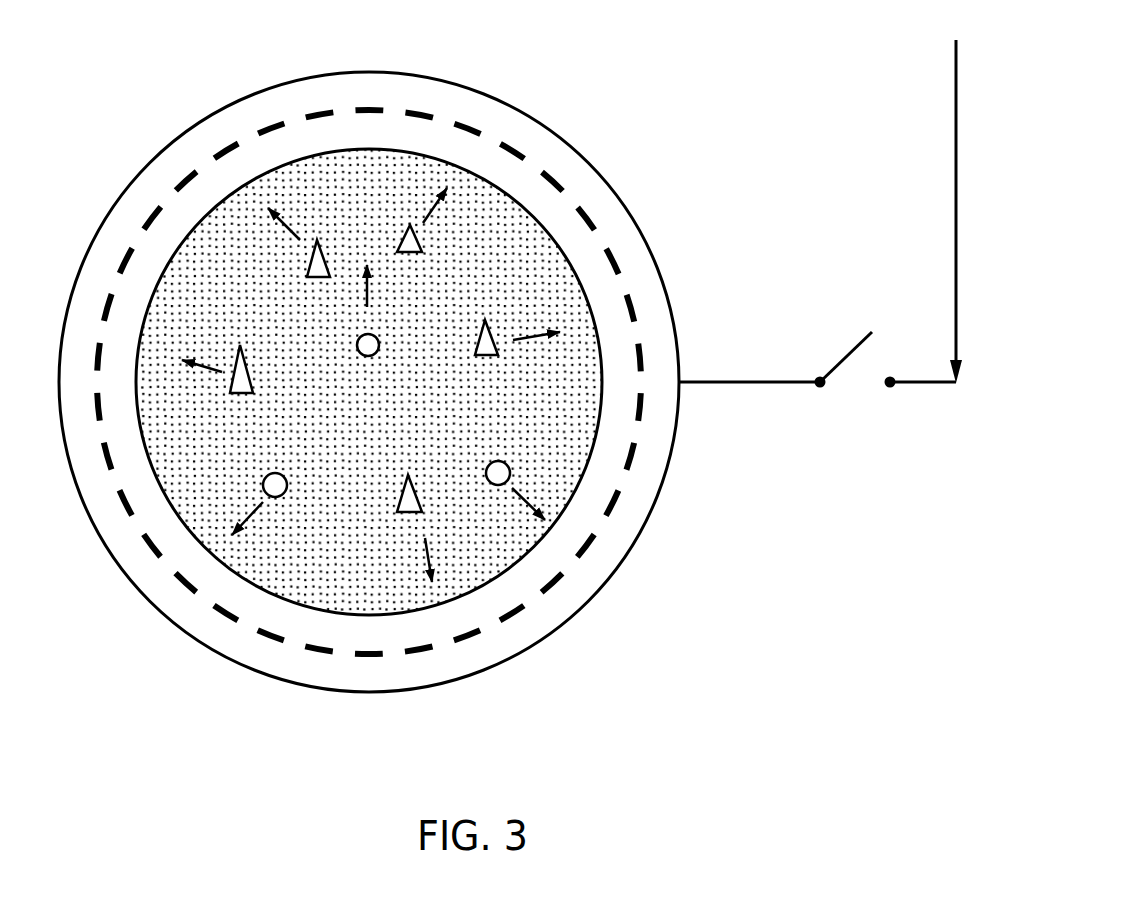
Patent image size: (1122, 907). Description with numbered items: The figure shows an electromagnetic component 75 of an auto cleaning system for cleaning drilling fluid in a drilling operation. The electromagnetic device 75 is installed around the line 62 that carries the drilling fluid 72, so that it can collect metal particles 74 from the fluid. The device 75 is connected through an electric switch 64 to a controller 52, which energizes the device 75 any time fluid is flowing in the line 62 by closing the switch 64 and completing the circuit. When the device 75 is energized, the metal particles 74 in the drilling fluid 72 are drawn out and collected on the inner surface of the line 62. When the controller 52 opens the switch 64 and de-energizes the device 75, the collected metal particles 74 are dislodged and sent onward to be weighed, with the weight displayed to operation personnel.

The controller 52 is at (956, 73).
The line 62 is at (443, 77).
The electric switch 64 is at (852, 345).
The drilling fluid 72 is at (517, 272).
The metal particles 74 is at (263, 487).
The electromagnetic component 75 is at (530, 157).